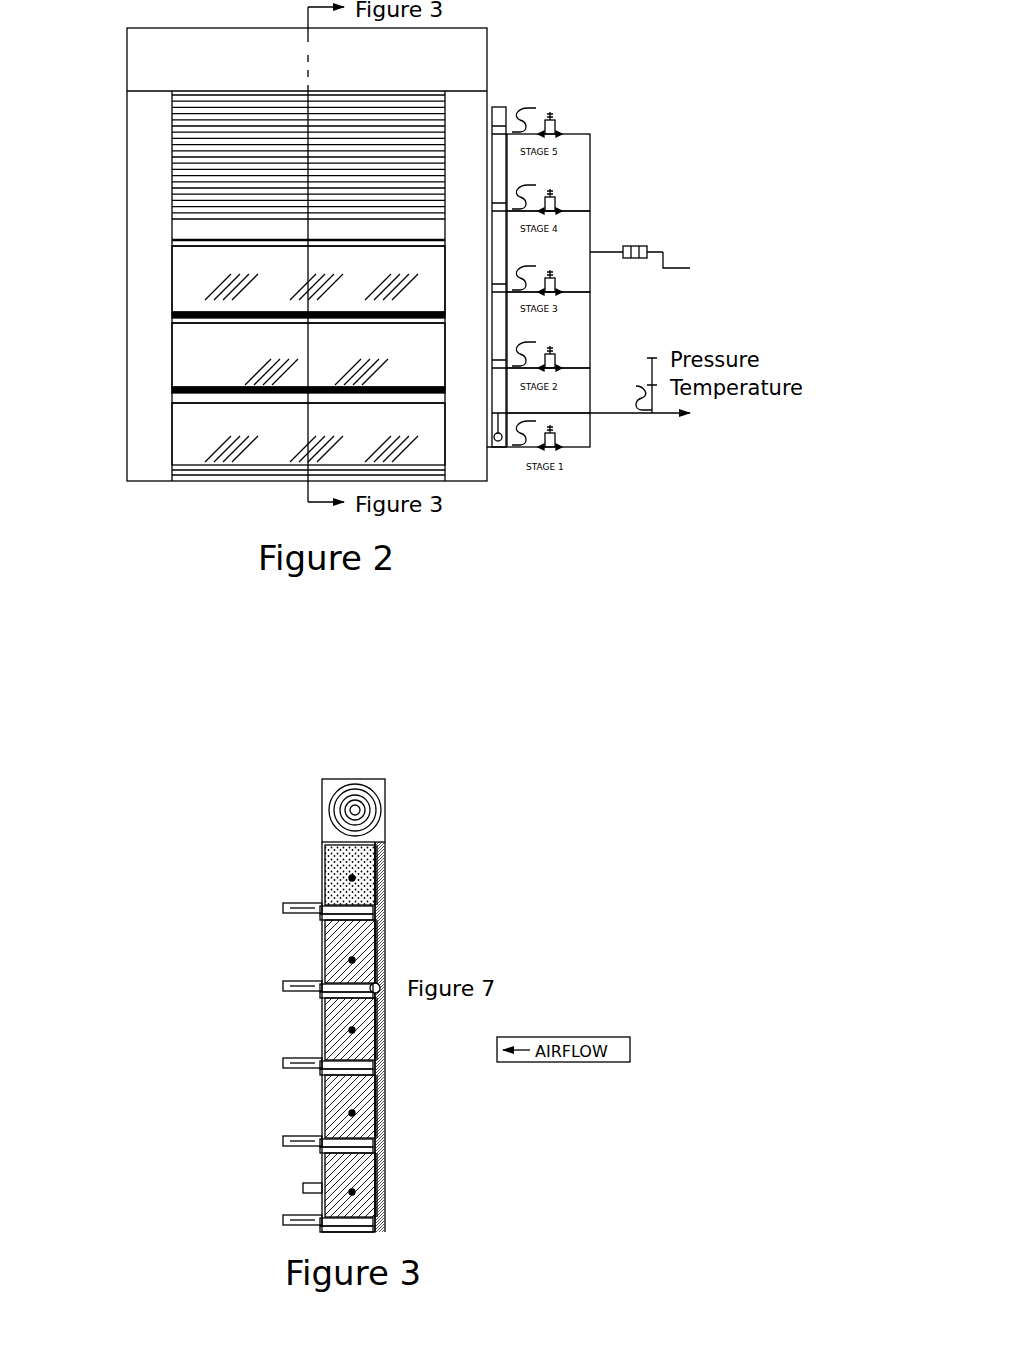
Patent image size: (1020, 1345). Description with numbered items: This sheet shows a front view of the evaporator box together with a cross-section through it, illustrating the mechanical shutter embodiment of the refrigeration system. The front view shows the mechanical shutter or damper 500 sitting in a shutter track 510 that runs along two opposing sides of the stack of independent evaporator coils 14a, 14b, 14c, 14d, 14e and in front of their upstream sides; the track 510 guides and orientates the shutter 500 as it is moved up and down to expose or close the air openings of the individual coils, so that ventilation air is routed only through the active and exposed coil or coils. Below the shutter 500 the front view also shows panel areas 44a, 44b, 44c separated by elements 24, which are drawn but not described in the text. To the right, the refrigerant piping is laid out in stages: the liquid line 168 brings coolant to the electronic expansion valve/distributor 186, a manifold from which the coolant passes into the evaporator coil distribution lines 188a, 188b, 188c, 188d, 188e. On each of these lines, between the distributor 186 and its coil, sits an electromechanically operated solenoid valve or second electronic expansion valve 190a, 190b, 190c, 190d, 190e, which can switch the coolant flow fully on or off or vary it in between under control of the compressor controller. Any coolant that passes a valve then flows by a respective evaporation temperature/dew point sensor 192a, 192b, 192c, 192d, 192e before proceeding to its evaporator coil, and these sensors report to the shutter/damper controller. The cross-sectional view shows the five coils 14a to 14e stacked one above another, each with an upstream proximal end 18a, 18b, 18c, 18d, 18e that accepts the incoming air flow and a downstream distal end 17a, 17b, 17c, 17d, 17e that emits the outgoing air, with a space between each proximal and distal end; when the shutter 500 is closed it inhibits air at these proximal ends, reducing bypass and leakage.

In FIG. 2, the mechanical shutter or damper 500 is at (222, 118).
In FIG. 2, the shutter track 510 is at (125, 128).
In FIG. 2, the evaporator coil 14a is at (222, 452).
In FIG. 3, the evaporator coil 14a is at (355, 1193).
In FIG. 2, the evaporator coil 14b is at (238, 368).
In FIG. 3, the evaporator coil 14b is at (355, 1114).
In FIG. 2, the evaporator coil 14c is at (222, 262).
In FIG. 3, the evaporator coil 14c is at (355, 1032).
In FIG. 3, the evaporator coil 14d is at (355, 960).
In FIG. 3, the evaporator coil 14e is at (355, 878).
In FIG. 2, the filter panel 44a is at (170, 436).
In FIG. 2, the filter panel 44b is at (170, 357).
In FIG. 2, the filter panel 44c is at (170, 283).
In FIG. 2, the separator band 24 is at (170, 314).
In FIG. 3, the distal end 17a is at (320, 1202).
In FIG. 3, the distal end 17b is at (320, 1107).
In FIG. 3, the distal end 17c is at (320, 1028).
In FIG. 3, the distal end 17d is at (320, 950).
In FIG. 3, the distal end 17e is at (320, 870).
In FIG. 3, the proximal end 18a is at (386, 1183).
In FIG. 3, the proximal end 18b is at (386, 1107).
In FIG. 3, the proximal end 18c is at (386, 1033).
In FIG. 3, the proximal end 18d is at (386, 935).
In FIG. 3, the proximal end 18e is at (386, 860).
In FIG. 2, the electronic expansion valve/distributor 186 is at (650, 250).
In FIG. 2, the liquid line 168 is at (700, 268).
In FIG. 2, the evaporator coil distribution line 188a is at (592, 432).
In FIG. 2, the evaporator coil distribution line 188b is at (592, 353).
In FIG. 2, the evaporator coil distribution line 188c is at (592, 262).
In FIG. 2, the evaporator coil distribution line 188d is at (592, 228).
In FIG. 2, the evaporator coil distribution line 188e is at (592, 172).
In FIG. 2, the solenoid valve or second electronic expansion valve/distributor 190a is at (556, 440).
In FIG. 2, the solenoid valve or second electronic expansion valve/distributor 190b is at (556, 347).
In FIG. 2, the solenoid valve or second electronic expansion valve/distributor 190c is at (556, 270).
In FIG. 2, the solenoid valve or second electronic expansion valve/distributor 190d is at (555, 192).
In FIG. 2, the solenoid valve or second electronic expansion valve/distributor 190e is at (552, 112).
In FIG. 2, the evaporation temperature/dew point sensor 192a is at (527, 447).
In FIG. 2, the evaporation temperature/dew point sensor 192b is at (538, 336).
In FIG. 2, the evaporation temperature/dew point sensor 192c is at (537, 258).
In FIG. 2, the evaporation temperature/dew point sensor 192d is at (540, 178).
In FIG. 2, the evaporation temperature/dew point sensor 192e is at (532, 102).